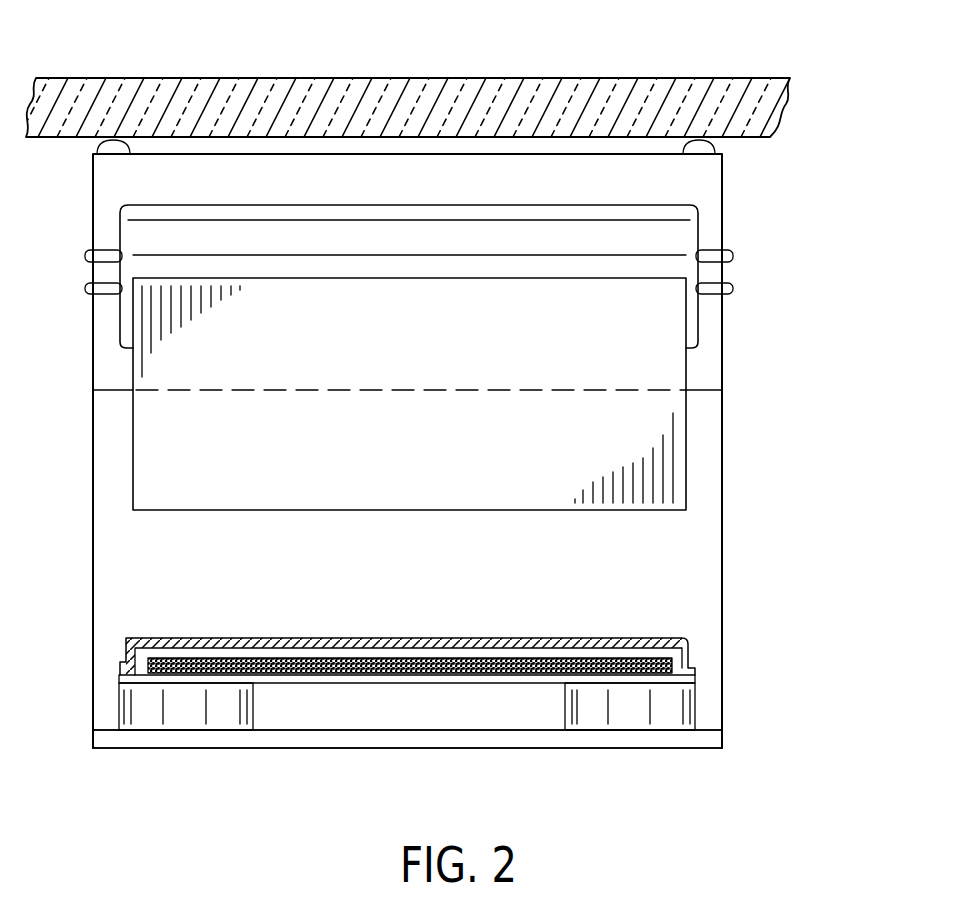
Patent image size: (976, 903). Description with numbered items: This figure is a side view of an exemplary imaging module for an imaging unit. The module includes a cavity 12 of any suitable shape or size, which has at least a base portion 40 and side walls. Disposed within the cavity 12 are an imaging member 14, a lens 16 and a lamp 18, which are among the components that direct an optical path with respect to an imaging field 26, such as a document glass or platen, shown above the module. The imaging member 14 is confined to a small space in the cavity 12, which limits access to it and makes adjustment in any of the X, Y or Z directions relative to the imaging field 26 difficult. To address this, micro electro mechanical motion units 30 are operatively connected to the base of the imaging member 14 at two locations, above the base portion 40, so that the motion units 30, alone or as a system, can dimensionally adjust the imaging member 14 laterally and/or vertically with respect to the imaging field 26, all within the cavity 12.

The imaging field 26 is at (688, 78).
The cavity 12 is at (732, 345).
The lamp 18 is at (688, 245).
The lens 16 is at (686, 447).
The imaging member 14 is at (700, 660).
The motion unit 30 is at (217, 722).
The base portion 40 is at (128, 746).